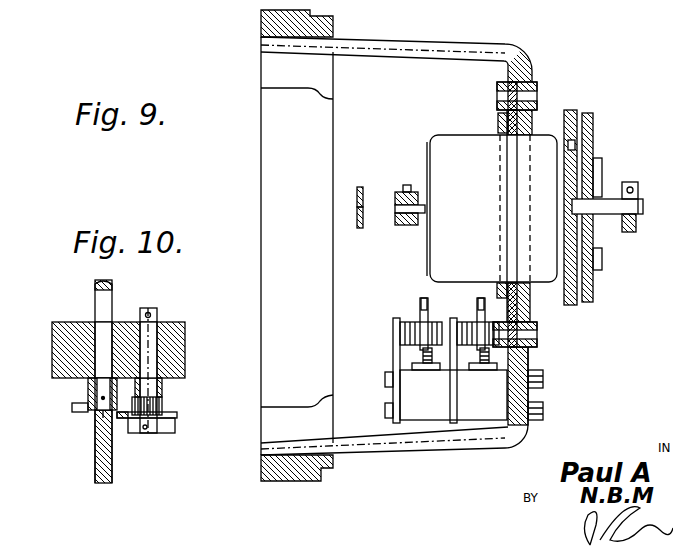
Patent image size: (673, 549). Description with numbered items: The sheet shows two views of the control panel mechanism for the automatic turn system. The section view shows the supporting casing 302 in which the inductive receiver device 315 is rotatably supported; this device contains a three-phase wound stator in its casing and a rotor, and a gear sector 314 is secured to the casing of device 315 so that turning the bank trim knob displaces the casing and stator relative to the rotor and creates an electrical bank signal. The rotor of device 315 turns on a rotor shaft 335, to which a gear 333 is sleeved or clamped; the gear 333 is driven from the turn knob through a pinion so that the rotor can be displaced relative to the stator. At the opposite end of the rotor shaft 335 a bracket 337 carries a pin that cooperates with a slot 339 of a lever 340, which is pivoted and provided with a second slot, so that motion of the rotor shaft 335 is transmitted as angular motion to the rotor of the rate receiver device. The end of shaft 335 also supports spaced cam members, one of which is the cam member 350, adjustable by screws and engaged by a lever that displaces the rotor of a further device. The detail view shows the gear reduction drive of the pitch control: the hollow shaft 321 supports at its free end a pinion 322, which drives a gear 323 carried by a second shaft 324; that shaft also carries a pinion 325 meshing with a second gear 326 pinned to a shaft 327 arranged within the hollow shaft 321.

In FIG. 9, the supporting casing 302 is at (366, 441).
In FIG. 9, the gear sector 314 is at (571, 110).
In FIG. 9, the inductive receiver device 315 is at (470, 258).
In FIG. 9, the gear 333 is at (592, 118).
In FIG. 9, the rotor shaft 335 is at (402, 190).
In FIG. 9, the bracket 337 is at (404, 218).
In FIG. 9, the slot 339 is at (357, 204).
In FIG. 9, the lever 340 is at (363, 187).
In FIG. 9, the cam member 350 is at (597, 250).
In FIG. 10, the hollow shaft 321 is at (95, 466).
In FIG. 10, the pinion 322 is at (90, 423).
In FIG. 10, the gear 323 is at (173, 427).
In FIG. 10, the second shaft 324 is at (143, 342).
In FIG. 10, the pinion 325 is at (168, 397).
In FIG. 10, the second gear 326 is at (88, 398).
In FIG. 10, the shaft 327 is at (100, 302).